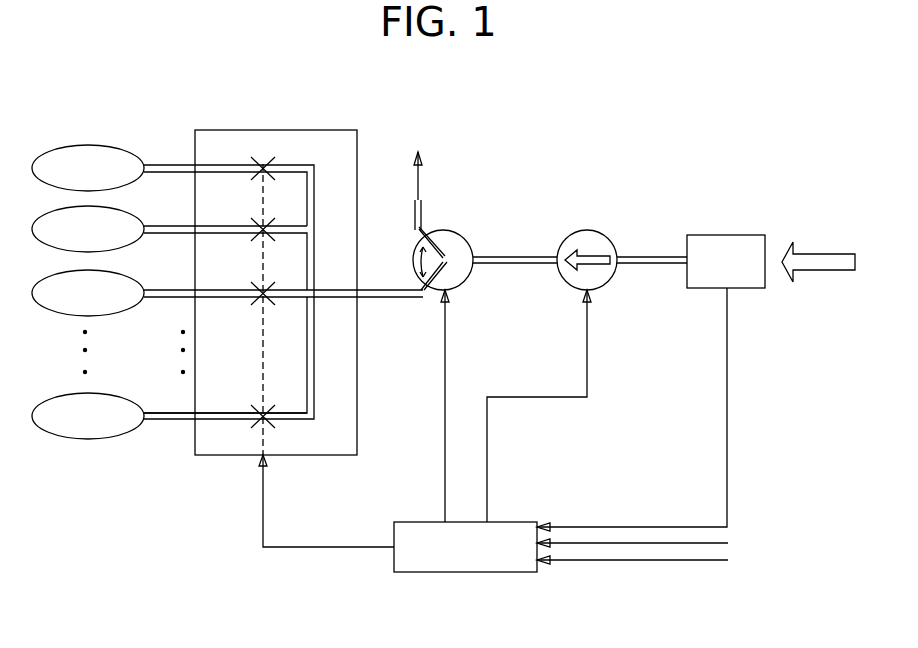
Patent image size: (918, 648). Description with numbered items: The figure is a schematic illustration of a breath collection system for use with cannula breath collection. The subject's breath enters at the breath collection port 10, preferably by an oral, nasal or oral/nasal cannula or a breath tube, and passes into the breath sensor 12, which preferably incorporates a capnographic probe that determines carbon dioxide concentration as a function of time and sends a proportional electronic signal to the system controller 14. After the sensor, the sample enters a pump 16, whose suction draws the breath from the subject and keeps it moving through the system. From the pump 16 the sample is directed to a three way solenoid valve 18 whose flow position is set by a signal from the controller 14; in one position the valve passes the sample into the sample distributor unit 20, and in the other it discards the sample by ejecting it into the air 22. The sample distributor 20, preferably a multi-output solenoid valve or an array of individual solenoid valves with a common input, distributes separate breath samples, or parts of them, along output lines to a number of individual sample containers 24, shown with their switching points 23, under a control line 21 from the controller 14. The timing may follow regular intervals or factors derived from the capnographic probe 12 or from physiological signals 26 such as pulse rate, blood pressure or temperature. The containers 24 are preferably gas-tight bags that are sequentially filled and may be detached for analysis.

The breath collection port 10 is at (843, 250).
The breath sensor 12 is at (738, 235).
The system controller 14 is at (513, 522).
The pump 16 is at (616, 210).
The three way solenoid valve 18 is at (478, 212).
The sample distributor unit 20 is at (278, 130).
The control line 21 is at (320, 545).
The air 22 is at (422, 180).
The switch 23 is at (268, 163).
The individual sample containers 24 is at (112, 147).
The physiological signals 26 is at (718, 556).